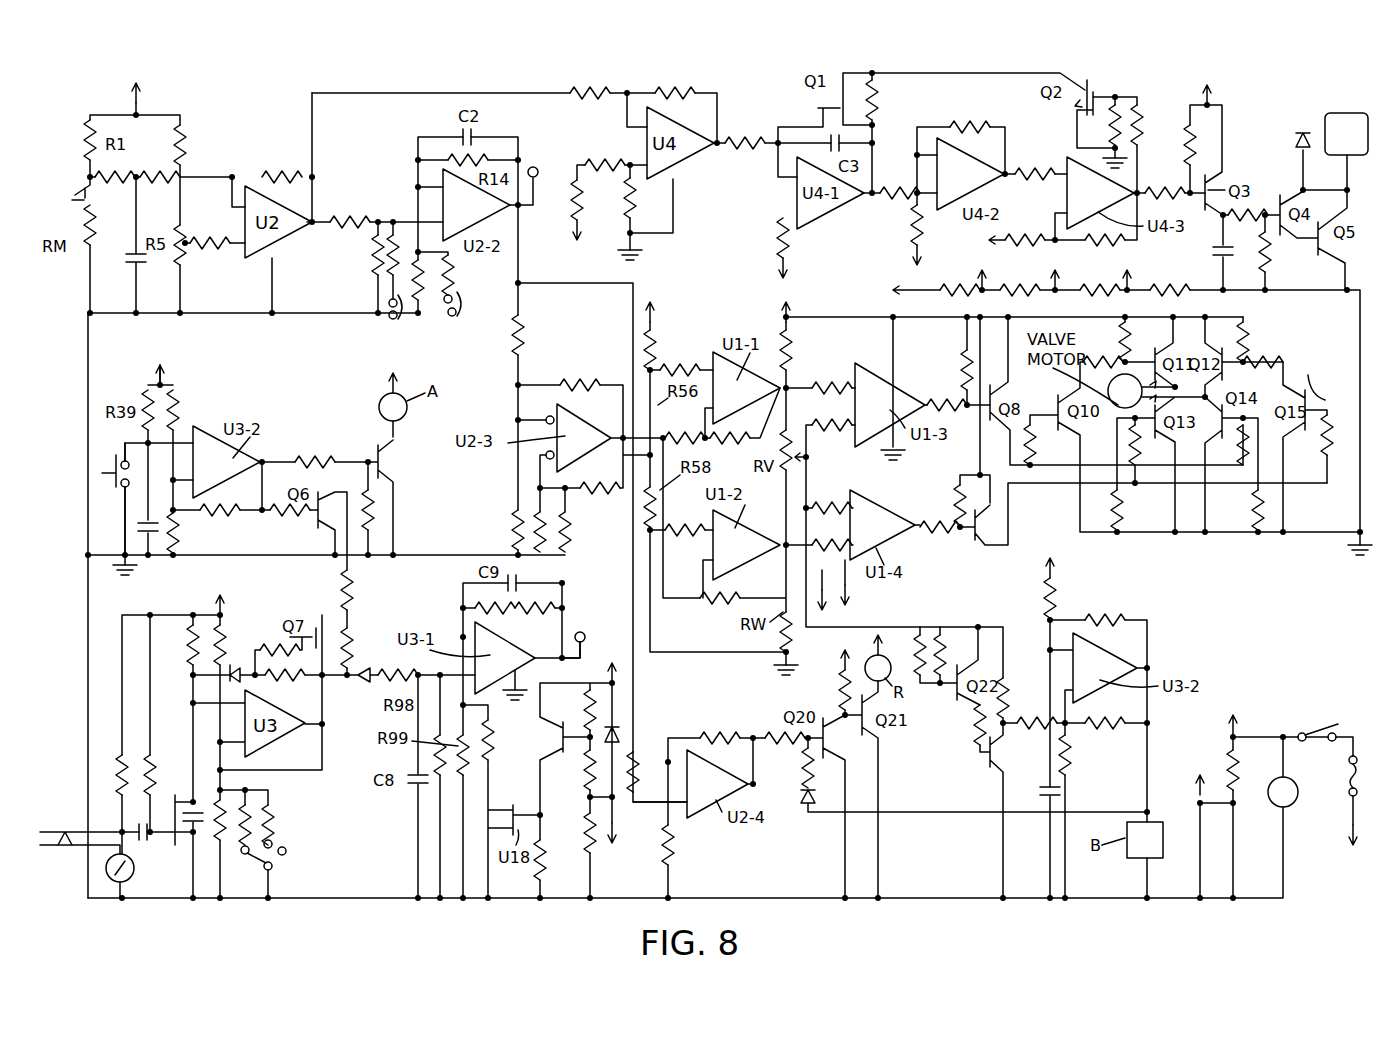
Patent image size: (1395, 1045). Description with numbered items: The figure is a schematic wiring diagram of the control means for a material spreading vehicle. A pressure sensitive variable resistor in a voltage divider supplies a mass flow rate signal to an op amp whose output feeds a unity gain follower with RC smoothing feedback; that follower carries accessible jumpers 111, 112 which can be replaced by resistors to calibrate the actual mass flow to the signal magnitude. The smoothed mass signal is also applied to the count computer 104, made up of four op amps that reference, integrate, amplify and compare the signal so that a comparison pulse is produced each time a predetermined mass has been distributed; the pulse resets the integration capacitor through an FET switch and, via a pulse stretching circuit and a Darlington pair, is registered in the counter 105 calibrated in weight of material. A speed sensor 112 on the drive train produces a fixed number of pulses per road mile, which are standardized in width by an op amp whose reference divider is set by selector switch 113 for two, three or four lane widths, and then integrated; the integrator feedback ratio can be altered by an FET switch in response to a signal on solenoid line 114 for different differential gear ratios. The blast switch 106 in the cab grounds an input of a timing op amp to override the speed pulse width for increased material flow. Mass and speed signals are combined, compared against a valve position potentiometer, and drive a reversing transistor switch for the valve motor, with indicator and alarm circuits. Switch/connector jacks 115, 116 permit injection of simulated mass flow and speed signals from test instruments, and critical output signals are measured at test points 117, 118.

The count computer 104 is at (1079, 79).
The counter 105 is at (1358, 146).
The blast switch 106 is at (105, 463).
The accessible jumper 111 is at (412, 324).
The speed sensor (switch) 112 is at (72, 880).
The selector switch 113 is at (281, 846).
The solenoid line 114 is at (643, 798).
The switch/connector jack 115 is at (72, 185).
The switch/connector jack 116 is at (70, 826).
The test point 117 is at (537, 166).
The test point 118 is at (585, 630).